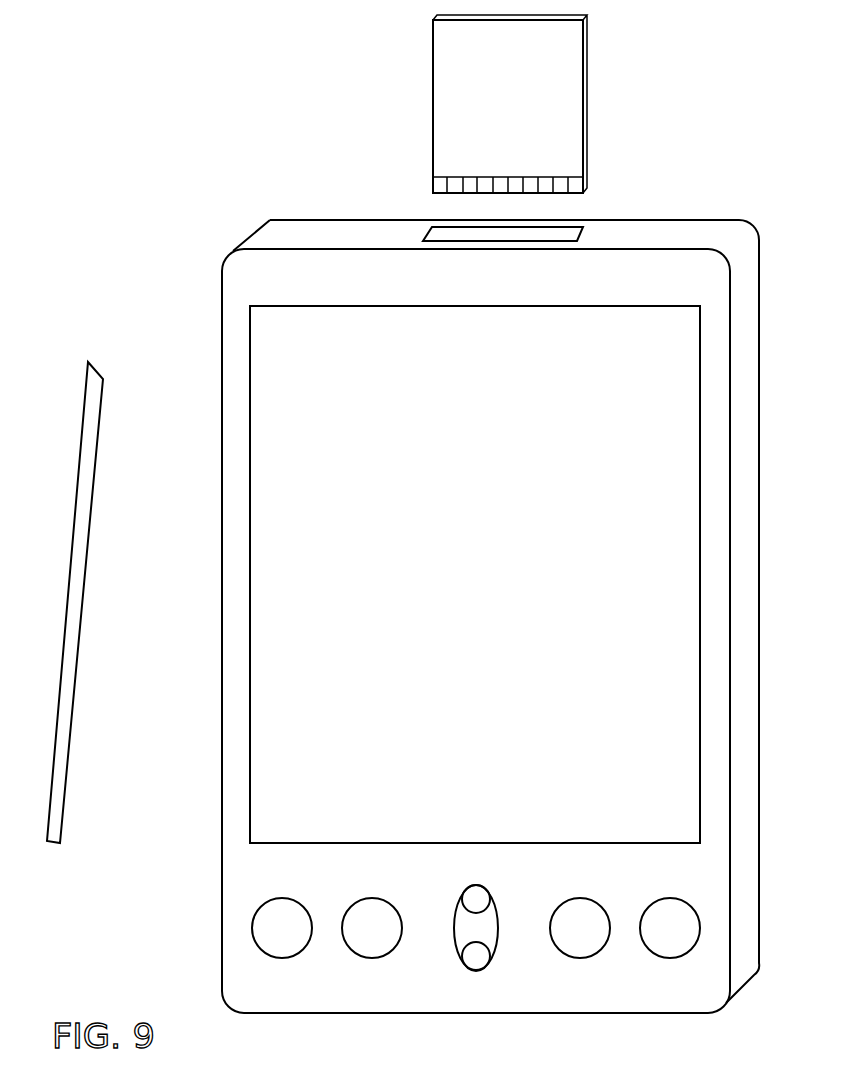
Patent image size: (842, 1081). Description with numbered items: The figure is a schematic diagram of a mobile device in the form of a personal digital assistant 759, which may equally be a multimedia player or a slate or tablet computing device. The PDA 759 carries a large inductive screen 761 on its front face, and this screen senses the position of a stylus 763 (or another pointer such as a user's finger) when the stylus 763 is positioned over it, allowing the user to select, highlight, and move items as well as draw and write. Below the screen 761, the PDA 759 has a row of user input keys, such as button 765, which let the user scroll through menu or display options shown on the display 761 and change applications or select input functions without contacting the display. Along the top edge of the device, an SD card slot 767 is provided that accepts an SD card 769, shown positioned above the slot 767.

The personal digital assistant 759 is at (192, 419).
The inductive screen 761 is at (448, 568).
The stylus 763 is at (57, 843).
The button 765 is at (267, 920).
The SD card slot 767 is at (508, 235).
The SD card 769 is at (433, 107).